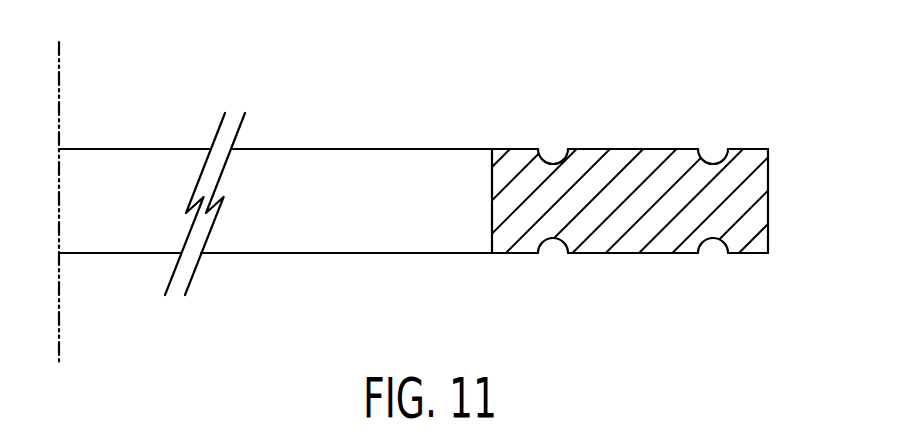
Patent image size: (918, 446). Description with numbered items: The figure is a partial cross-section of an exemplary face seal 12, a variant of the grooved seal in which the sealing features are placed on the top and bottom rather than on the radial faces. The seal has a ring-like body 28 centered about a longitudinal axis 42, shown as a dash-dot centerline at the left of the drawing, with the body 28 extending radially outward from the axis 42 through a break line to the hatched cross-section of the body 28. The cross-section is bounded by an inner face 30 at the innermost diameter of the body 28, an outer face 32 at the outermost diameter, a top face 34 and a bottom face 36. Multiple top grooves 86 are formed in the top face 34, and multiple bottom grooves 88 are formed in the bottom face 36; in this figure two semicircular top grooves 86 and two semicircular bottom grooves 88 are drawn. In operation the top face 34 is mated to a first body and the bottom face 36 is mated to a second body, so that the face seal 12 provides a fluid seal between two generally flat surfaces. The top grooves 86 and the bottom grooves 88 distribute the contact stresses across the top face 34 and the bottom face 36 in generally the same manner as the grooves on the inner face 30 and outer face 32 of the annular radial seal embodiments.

The face seal 12 is at (451, 174).
The body 28 is at (624, 174).
The inner face 30 is at (492, 217).
The outer face 32 is at (768, 205).
The top face 34 is at (623, 149).
The bottom face 36 is at (622, 254).
The longitudinal axis 42 is at (59, 103).
The top grooves 86 is at (554, 140).
The bottom grooves 88 is at (552, 268).